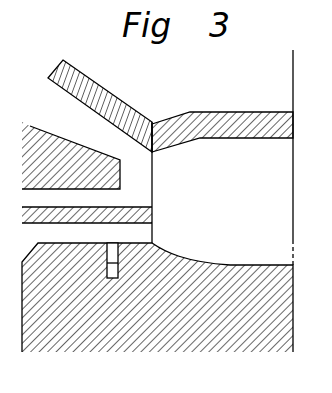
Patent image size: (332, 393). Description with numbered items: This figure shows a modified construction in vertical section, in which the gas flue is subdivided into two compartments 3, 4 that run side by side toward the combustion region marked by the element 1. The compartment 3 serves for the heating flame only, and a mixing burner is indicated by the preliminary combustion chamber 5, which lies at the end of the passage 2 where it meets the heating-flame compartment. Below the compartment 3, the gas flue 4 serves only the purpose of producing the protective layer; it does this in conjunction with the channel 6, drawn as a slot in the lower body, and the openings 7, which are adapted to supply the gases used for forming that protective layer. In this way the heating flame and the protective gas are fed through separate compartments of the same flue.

The nozzle chamber 1 is at (222, 177).
The inlet passage 2 is at (87, 124).
The compartment 3 is at (87, 205).
The gas flue 4 is at (88, 226).
The preliminary combustion chamber 5 is at (136, 178).
The channel 6 is at (118, 278).
The openings 7 is at (126, 230).